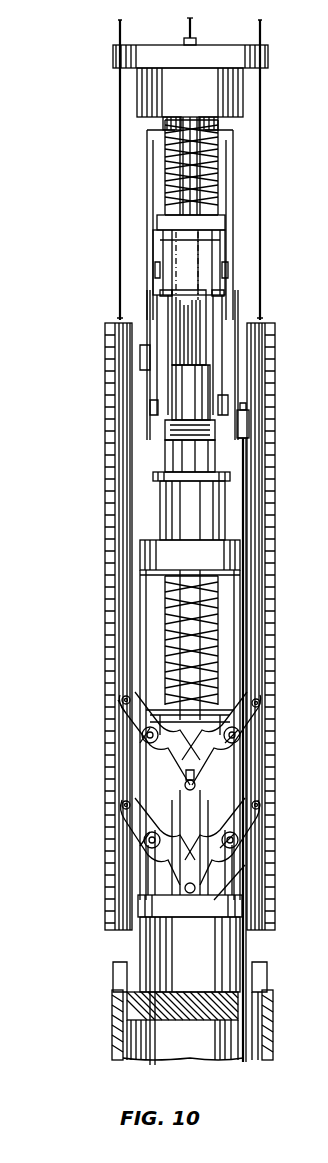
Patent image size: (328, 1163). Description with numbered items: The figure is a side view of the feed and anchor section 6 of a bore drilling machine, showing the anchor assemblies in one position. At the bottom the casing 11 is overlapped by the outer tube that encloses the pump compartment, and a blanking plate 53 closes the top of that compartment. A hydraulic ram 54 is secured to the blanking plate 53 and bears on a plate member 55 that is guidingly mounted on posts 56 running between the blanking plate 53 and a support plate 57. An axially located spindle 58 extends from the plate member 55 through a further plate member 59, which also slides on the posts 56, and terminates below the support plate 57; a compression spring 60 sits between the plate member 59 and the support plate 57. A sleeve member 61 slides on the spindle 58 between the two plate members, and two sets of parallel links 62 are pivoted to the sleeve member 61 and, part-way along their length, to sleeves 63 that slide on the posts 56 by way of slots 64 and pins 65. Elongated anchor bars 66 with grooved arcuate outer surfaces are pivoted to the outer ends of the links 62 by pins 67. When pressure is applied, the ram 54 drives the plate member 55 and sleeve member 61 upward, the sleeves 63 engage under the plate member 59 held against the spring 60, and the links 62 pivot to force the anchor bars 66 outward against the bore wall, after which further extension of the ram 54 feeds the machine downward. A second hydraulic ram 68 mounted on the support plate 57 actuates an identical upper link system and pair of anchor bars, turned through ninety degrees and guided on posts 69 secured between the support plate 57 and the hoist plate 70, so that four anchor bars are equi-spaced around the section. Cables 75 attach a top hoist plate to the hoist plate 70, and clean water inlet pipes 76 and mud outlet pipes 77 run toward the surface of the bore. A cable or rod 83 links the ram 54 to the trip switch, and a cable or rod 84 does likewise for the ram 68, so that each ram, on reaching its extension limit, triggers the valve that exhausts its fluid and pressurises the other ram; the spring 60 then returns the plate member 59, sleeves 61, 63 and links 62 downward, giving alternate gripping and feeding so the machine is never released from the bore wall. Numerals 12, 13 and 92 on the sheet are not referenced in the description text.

The feed and anchor section 6 is at (86, 374).
The casing 11 is at (115, 1042).
The section line 12 is at (85, 660).
The section line 13 is at (78, 888).
The blanking plate 53 is at (228, 1007).
The hydraulic ram 54 is at (210, 960).
The plate member 55 is at (218, 908).
The posts 56 is at (140, 595).
The support plate 57 is at (225, 553).
The spindle 58 is at (200, 753).
The further plate member 59 is at (240, 723).
The compression spring 60 is at (167, 635).
The sleeve member 61 is at (205, 383).
The parallel links 62 is at (170, 262).
The sleeves 63 is at (160, 782).
The slots 64 is at (150, 842).
The pins 65 is at (160, 860).
The anchor bars 66 is at (236, 218).
The pins 67 is at (150, 802).
The second hydraulic ram 68 is at (172, 502).
The posts 69 is at (214, 172).
The hoist plate 70 is at (238, 98).
The cables 75 is at (228, 18).
The clean water inlet pipes 76 is at (113, 978).
The mud outlet pipes 77 is at (267, 980).
The cable or rod 83 is at (150, 952).
The cable or rod 84 is at (249, 458).
The frame rod 92 is at (262, 186).